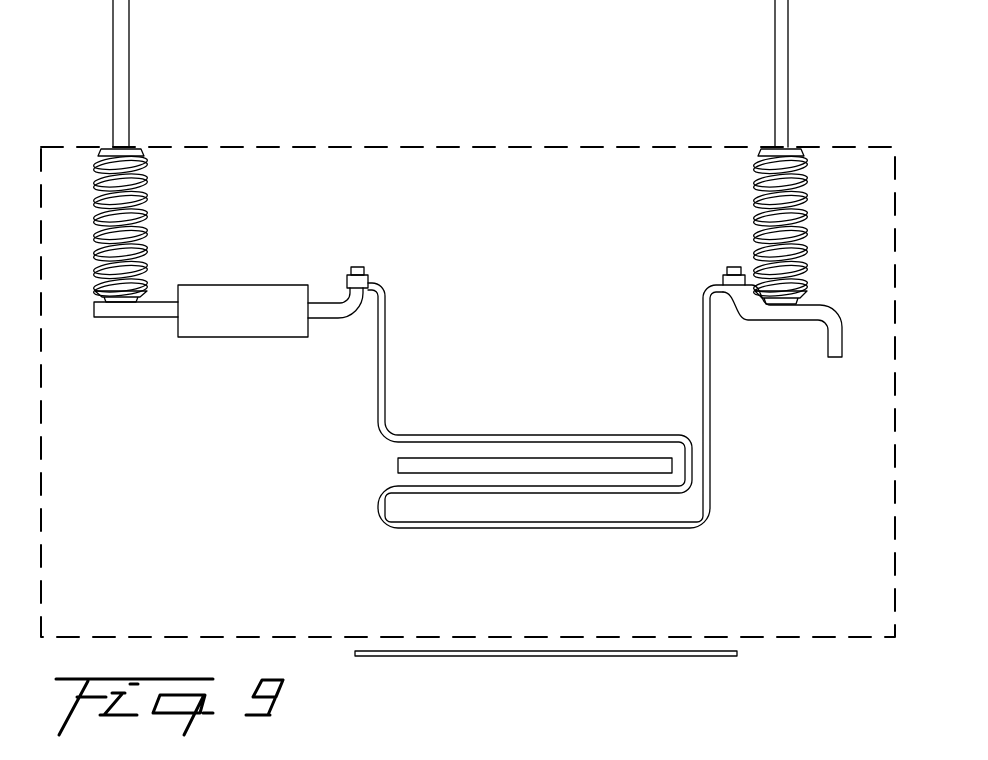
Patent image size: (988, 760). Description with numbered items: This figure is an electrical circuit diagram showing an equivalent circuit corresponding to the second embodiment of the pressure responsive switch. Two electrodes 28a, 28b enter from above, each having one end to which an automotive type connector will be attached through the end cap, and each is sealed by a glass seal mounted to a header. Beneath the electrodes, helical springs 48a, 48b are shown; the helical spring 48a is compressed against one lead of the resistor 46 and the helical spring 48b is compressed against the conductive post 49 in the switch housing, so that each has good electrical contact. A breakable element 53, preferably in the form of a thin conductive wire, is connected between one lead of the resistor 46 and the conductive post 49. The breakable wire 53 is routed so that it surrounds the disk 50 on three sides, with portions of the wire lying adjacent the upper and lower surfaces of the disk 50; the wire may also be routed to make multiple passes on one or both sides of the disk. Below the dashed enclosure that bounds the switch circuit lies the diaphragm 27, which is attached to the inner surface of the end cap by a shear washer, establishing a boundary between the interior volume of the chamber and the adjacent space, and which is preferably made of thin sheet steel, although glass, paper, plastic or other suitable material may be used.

The diaphragm 27 is at (608, 657).
The electrode 28a is at (121, 66).
The electrode 28b is at (783, 48).
The resistor 46 is at (273, 326).
The helical spring 48a is at (143, 223).
The helical spring 48b is at (766, 203).
The conductive post 49 is at (837, 329).
The disk 50 is at (398, 466).
The breakable element 53 is at (707, 445).